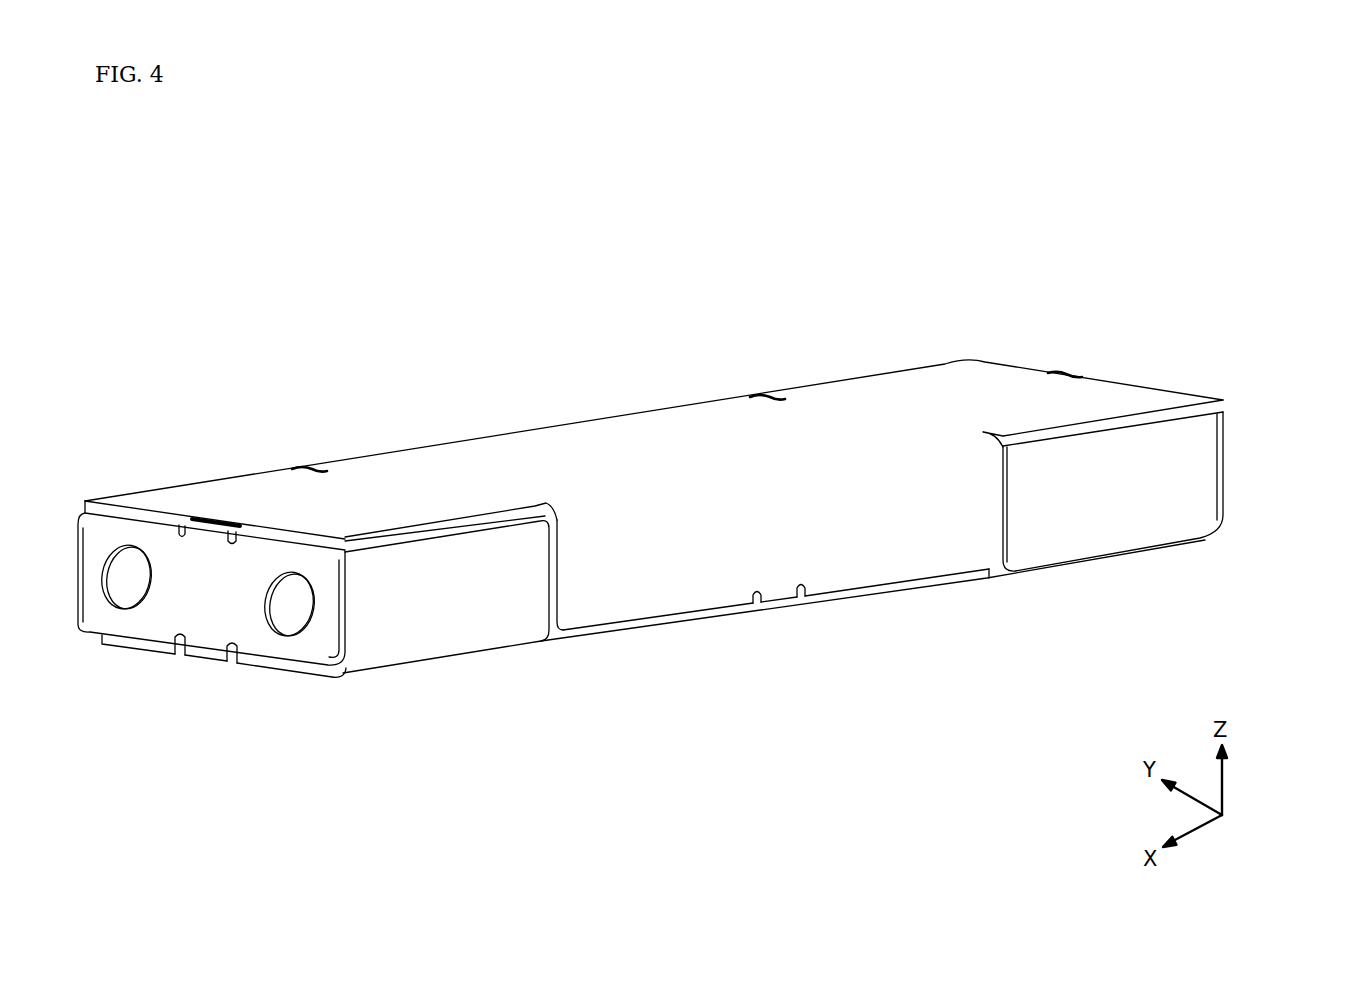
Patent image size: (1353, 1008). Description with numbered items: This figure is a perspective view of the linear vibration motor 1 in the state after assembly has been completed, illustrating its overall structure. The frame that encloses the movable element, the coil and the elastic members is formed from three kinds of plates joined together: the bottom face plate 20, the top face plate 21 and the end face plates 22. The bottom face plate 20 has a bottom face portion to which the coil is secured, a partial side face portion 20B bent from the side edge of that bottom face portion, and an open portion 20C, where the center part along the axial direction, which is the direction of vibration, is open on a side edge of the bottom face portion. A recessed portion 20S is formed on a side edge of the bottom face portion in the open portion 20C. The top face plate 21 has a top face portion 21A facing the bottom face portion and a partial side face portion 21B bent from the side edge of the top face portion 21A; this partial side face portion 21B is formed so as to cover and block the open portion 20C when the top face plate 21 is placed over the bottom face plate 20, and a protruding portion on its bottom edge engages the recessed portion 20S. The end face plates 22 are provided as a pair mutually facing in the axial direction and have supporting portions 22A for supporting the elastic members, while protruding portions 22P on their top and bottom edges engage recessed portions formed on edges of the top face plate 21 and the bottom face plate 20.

The linear vibration motor 1 is at (883, 304).
The bottom face plate 20 is at (380, 672).
The partial side face portion 20B is at (453, 632).
The open portion 20C is at (988, 597).
The recessed portion 20S is at (221, 662).
The top face plate 21 is at (622, 413).
The top face portion 21A is at (445, 473).
The partial side face portion 21B is at (950, 523).
The end face plates 22 is at (1225, 473).
The supporting portions 22A is at (125, 585).
The projection of end plate 22P is at (215, 520).